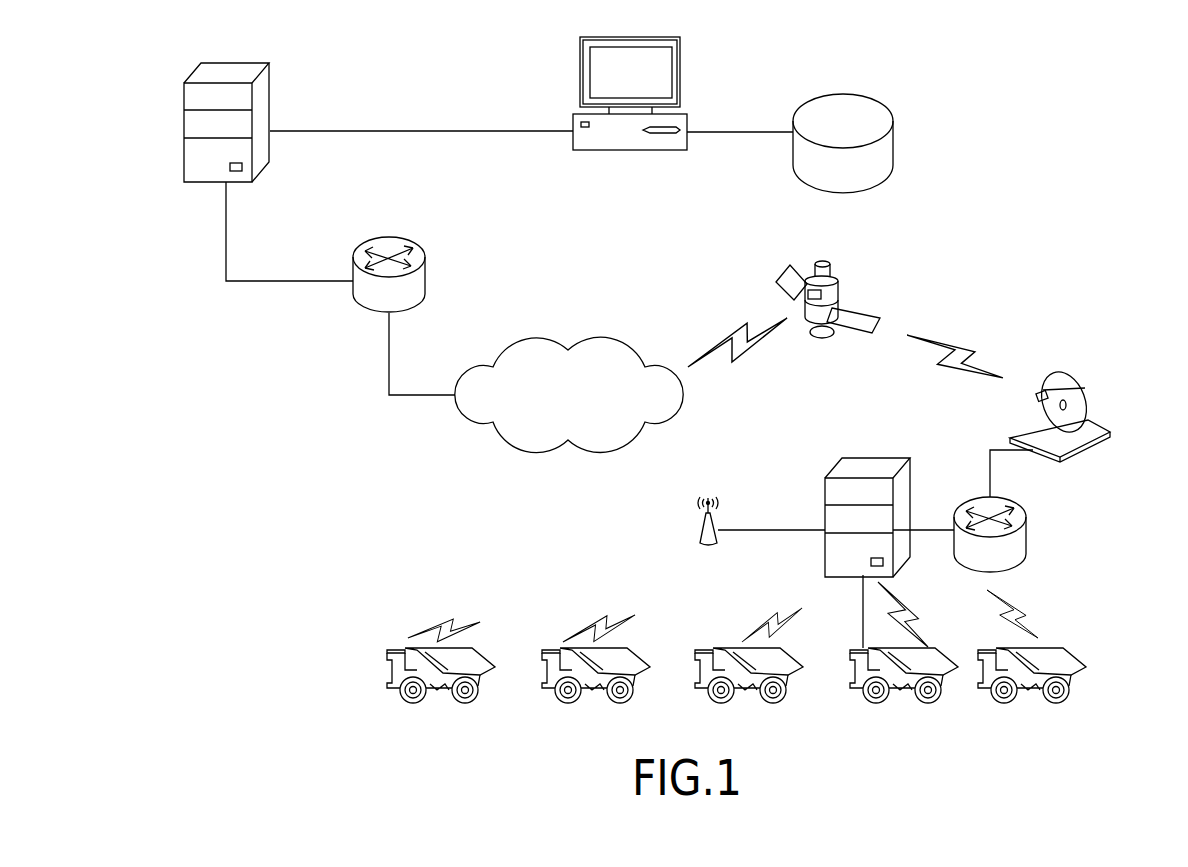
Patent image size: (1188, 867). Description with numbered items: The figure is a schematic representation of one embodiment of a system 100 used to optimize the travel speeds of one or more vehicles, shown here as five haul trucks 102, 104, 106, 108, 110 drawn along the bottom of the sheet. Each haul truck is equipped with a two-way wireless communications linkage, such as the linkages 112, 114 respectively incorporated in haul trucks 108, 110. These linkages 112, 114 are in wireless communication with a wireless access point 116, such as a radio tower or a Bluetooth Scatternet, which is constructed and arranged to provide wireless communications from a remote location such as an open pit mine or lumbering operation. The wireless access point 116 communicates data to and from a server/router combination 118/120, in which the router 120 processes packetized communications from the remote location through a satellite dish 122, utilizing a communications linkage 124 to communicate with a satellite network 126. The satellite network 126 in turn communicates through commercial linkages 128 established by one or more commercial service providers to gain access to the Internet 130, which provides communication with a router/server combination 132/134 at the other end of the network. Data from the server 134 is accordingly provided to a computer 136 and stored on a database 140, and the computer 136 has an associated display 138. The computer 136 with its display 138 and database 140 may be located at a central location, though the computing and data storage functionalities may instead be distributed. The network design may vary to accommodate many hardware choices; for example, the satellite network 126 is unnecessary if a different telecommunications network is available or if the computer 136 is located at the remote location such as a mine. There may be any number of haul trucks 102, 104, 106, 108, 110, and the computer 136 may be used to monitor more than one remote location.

The system 100 is at (1090, 128).
The haul truck 102 is at (1077, 655).
The haul truck 104 is at (928, 647).
The haul truck 106 is at (800, 648).
The haul truck 108 is at (637, 648).
The haul truck 110 is at (480, 650).
The two-way wireless communications linkage 112 is at (437, 623).
The two-way wireless communications linkage 114 is at (602, 615).
The wireless access point 116 is at (702, 525).
The server 118 is at (857, 458).
The router 120 is at (1028, 533).
The satellite dish 122 is at (1085, 400).
The communications linkage 124 is at (963, 343).
The satellite network 126 is at (840, 267).
The commercial linkages 128 is at (745, 322).
The Internet 130 is at (542, 335).
The router 132 is at (425, 270).
The server 134 is at (270, 93).
The computer 136 is at (688, 132).
The display 138 is at (680, 62).
The database 140 is at (893, 97).